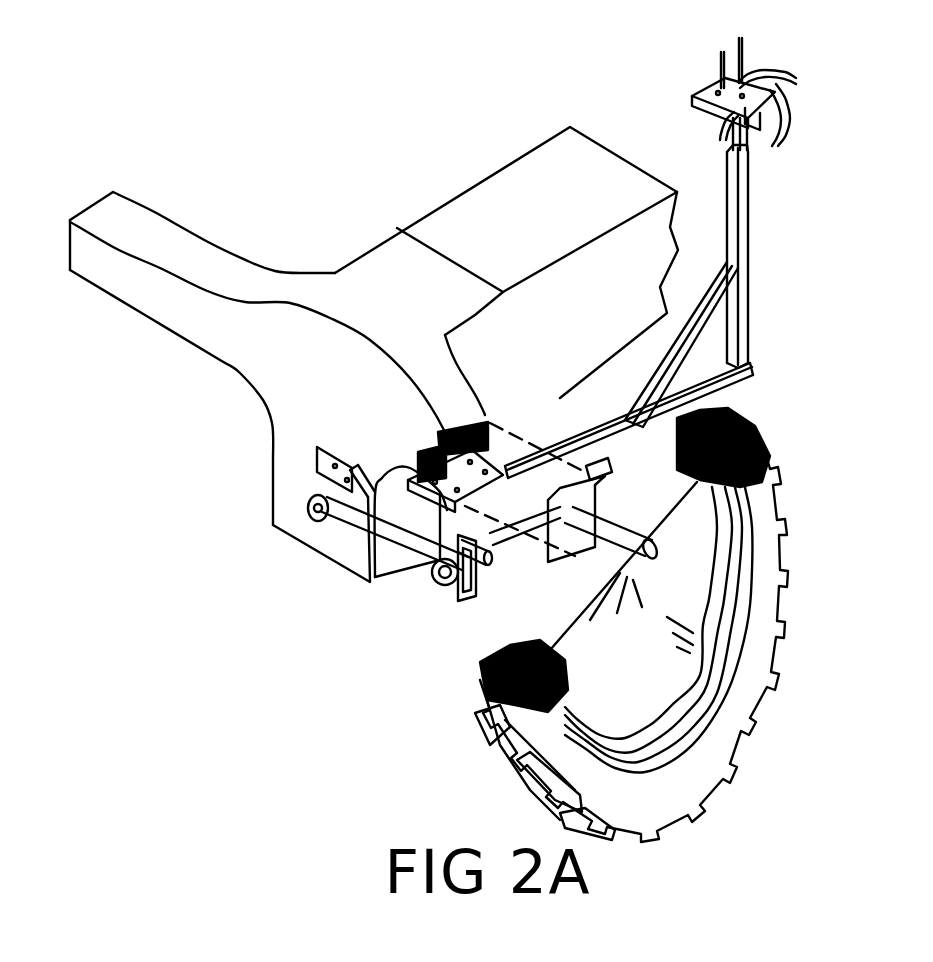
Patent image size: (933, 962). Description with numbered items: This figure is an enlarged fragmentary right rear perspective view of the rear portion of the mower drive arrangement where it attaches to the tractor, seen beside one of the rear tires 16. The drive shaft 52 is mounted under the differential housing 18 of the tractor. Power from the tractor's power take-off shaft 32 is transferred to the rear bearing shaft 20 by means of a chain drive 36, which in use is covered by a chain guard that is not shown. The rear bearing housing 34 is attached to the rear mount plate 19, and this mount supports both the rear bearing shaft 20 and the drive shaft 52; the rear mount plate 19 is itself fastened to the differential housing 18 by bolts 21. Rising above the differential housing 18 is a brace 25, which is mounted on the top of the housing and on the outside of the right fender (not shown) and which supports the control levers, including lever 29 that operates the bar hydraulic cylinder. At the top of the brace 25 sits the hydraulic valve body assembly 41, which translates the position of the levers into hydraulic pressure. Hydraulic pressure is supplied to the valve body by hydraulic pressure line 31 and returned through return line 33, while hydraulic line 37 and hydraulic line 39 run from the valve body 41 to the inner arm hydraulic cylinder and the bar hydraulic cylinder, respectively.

The rear tires 16 is at (723, 743).
The differential housing 18 is at (387, 316).
The rear mount plate 19 is at (350, 470).
The rear bearing shaft 20 is at (427, 580).
The bolts 21 is at (322, 447).
The brace 25 is at (743, 313).
The lever 29 is at (720, 55).
The hydraulic pressure line 31 is at (793, 122).
The power take-off shaft 32 is at (323, 490).
The return line 33 is at (722, 127).
The rear bearing housing 34 is at (462, 543).
The chain drive 36 is at (403, 567).
The hydraulic line 37 is at (790, 72).
The hydraulic line 39 is at (792, 88).
The hydraulic valve body assembly 41 is at (752, 108).
The drive shaft 52 is at (603, 472).